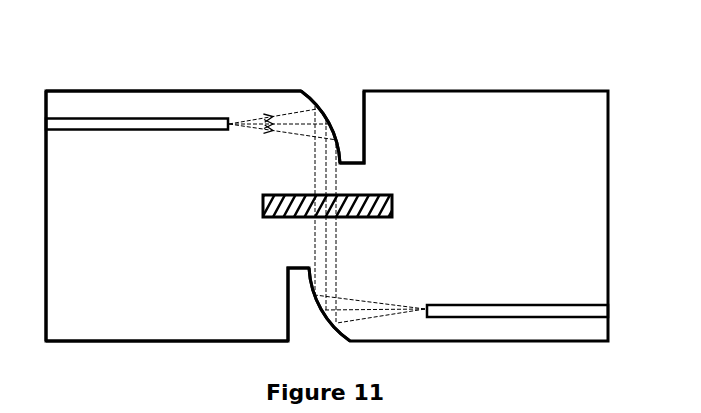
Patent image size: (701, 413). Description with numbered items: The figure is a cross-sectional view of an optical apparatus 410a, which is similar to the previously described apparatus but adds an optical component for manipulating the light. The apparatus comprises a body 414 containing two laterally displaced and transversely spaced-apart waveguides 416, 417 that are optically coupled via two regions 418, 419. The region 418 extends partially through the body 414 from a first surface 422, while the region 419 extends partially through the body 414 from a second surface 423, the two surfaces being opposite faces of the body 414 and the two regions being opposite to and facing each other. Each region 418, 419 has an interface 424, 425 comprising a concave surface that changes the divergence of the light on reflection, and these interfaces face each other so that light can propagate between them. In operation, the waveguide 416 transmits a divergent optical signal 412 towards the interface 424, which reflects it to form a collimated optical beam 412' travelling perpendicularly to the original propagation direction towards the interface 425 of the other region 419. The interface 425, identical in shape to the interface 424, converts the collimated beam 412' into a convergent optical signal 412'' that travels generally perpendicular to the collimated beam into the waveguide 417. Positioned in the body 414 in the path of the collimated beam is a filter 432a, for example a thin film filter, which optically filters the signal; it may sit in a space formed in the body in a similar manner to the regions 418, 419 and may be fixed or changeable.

The optical apparatus 410a is at (102, 55).
The body 414 is at (62, 105).
The first surface 422 is at (203, 90).
The second surface 423 is at (198, 342).
The interface 424 is at (334, 124).
The region 418 is at (355, 147).
The region 419 is at (298, 287).
The interface 425 is at (320, 308).
The waveguide 416 is at (102, 130).
The waveguide 417 is at (534, 304).
The optical signal 412 is at (283, 139).
The collimated optical beam 412' is at (299, 215).
The convergent optical signal 412'' is at (370, 299).
The filter 432a is at (394, 206).